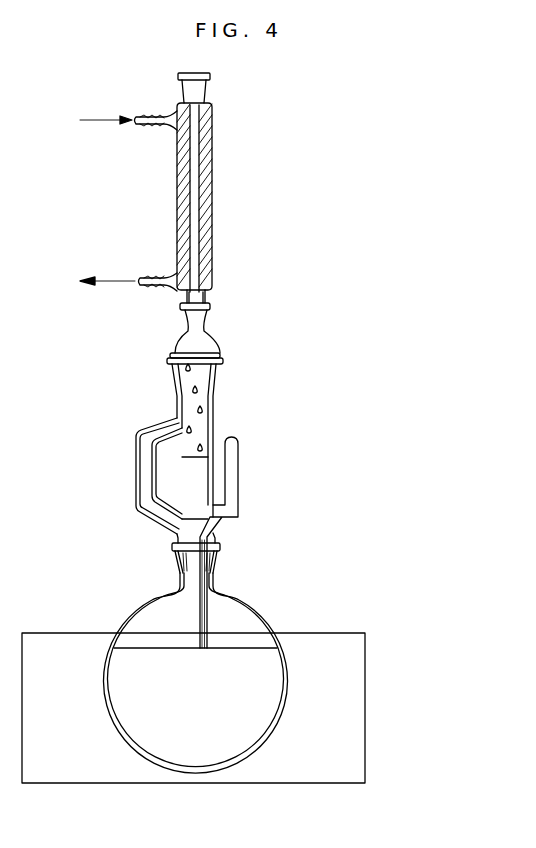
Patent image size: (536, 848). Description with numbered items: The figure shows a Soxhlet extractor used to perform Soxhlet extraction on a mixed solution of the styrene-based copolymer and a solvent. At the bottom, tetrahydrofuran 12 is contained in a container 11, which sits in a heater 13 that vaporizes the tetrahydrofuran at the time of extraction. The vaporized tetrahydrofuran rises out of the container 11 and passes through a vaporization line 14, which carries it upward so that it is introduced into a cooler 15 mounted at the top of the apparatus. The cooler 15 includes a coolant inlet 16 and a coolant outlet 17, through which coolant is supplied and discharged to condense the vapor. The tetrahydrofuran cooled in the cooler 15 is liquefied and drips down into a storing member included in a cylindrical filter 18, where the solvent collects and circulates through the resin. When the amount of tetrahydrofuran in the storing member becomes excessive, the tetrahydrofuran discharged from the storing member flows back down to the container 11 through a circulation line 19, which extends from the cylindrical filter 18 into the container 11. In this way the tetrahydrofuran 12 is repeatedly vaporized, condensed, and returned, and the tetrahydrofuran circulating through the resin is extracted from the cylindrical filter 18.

The container 11 is at (252, 612).
The tetrahydrofuran 12 is at (126, 713).
The heater 13 is at (348, 685).
The vaporization line 14 is at (137, 482).
The cooler 15 is at (212, 205).
The coolant inlet 16 is at (140, 124).
The coolant outlet 17 is at (138, 285).
The cylindrical filter 18 is at (203, 482).
The circulation line 19 is at (238, 510).